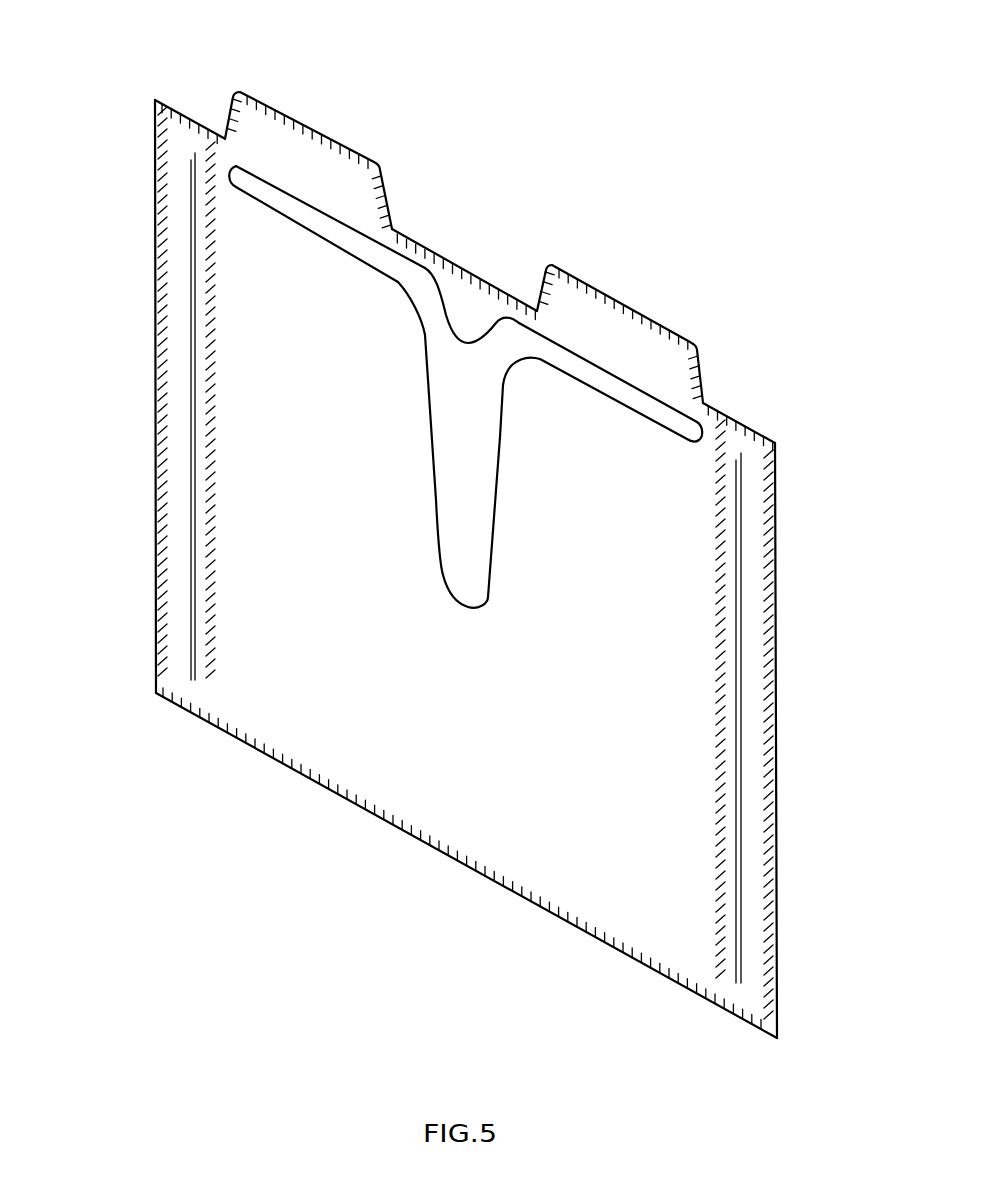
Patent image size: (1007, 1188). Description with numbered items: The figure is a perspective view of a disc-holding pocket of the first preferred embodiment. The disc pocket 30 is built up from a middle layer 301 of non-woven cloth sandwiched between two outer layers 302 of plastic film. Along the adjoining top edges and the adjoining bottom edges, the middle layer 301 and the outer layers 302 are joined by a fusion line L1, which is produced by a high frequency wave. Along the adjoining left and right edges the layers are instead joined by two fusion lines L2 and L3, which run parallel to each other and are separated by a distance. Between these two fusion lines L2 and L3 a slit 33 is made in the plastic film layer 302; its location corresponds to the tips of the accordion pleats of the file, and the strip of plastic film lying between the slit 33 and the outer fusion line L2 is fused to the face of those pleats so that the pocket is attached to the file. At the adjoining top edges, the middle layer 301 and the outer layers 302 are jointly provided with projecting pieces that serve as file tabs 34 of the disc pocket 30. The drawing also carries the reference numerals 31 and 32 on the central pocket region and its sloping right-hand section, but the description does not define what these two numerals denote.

The disc pocket 30 is at (676, 188).
The filling channel / pocket 31 is at (465, 331).
The right channel section 32 is at (578, 373).
The middle layer 301 is at (460, 363).
The outer layer 302 is at (372, 315).
The slit 33 is at (192, 298).
The file tab 34 is at (298, 160).
The fusion line L1 is at (490, 283).
The fusion line L2 is at (163, 338).
The fusion line L3 is at (213, 323).